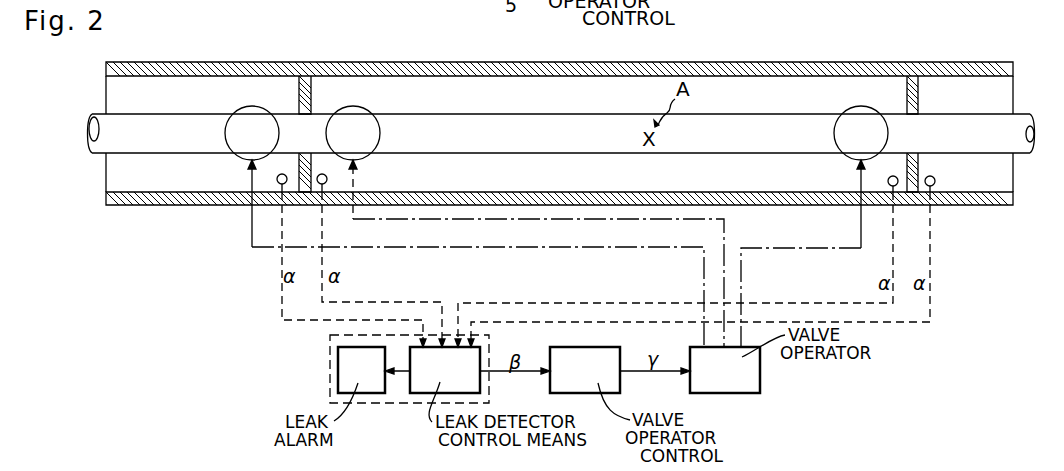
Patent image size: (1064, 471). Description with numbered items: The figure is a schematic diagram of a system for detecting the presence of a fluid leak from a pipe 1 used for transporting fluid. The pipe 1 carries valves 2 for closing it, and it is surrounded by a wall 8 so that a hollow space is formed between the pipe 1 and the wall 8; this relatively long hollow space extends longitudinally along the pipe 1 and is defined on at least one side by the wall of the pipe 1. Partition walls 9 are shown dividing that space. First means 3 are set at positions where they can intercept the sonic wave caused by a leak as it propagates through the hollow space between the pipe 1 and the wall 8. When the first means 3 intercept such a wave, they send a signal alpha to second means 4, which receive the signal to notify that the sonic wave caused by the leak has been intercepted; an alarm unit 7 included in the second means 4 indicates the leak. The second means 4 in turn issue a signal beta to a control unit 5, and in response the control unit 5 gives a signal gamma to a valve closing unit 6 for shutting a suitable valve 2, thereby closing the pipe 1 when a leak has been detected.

The pipe 1 is at (481, 123).
The valve 2 is at (256, 118).
The first means 3 is at (280, 192).
The second means 4 is at (330, 345).
The control unit 5 is at (620, 383).
The valve closing unit 6 is at (747, 382).
The alarm unit 7 is at (348, 376).
The wall 8 is at (430, 63).
The partition wall 9 is at (317, 81).